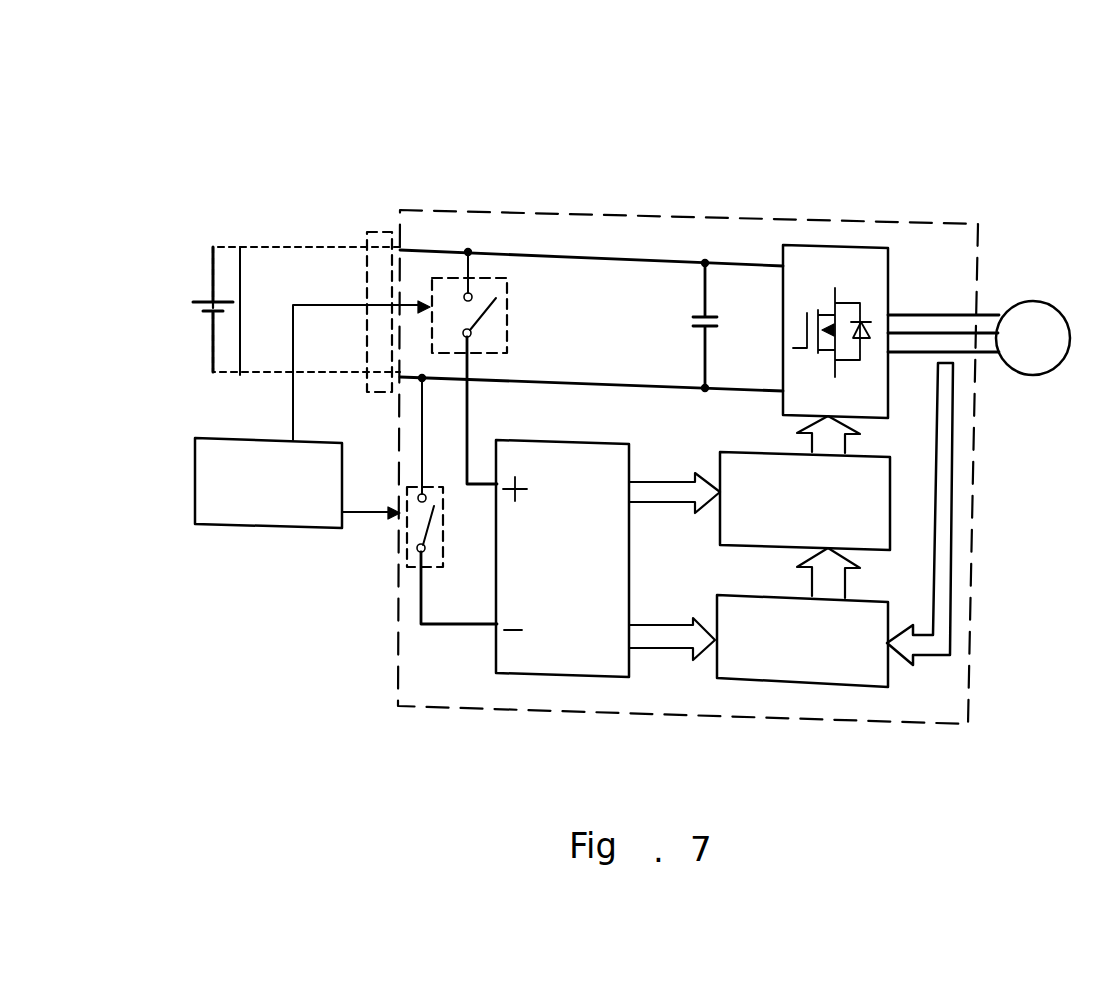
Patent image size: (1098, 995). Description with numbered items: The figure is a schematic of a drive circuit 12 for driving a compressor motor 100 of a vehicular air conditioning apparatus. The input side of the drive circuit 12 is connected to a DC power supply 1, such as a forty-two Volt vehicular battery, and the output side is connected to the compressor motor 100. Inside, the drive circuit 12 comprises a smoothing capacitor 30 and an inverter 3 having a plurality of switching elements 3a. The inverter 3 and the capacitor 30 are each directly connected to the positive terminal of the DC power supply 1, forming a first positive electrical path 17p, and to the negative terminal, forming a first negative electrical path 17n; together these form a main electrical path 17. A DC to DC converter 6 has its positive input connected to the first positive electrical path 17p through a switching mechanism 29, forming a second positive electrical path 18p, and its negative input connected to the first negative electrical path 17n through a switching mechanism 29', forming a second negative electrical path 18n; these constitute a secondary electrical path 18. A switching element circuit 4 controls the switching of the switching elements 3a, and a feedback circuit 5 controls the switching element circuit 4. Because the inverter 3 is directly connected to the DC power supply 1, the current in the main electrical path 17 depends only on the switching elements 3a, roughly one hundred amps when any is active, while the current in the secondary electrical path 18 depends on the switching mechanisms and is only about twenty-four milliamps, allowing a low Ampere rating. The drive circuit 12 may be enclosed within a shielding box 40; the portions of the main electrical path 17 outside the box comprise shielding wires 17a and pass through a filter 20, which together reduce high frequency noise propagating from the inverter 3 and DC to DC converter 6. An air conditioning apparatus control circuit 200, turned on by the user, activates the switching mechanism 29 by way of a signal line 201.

The DC power supply 1 is at (207, 298).
The inverter 3 is at (805, 245).
The switching element 3a is at (845, 296).
The switching element circuit 4 is at (733, 452).
The feedback circuit 5 is at (738, 596).
The DC to DC converter 6 is at (551, 440).
The drive circuit 12 is at (617, 210).
The main electrical path 17 is at (570, 344).
The shielding wires 17a is at (240, 375).
The first positive electrical path 17p is at (567, 268).
The first negative electrical path 17n is at (572, 357).
The secondary electrical path 18 is at (473, 516).
The second positive electrical path 18p is at (466, 487).
The second negative electrical path 18n is at (450, 630).
The filter 20 is at (367, 283).
The switching mechanism 29 is at (478, 183).
The switching mechanism 29' is at (370, 552).
The smoothing capacitor 30 is at (714, 330).
The shielding box 40 is at (968, 694).
The compressor motor 100 is at (1038, 301).
The air conditioning apparatus control circuit 200 is at (257, 528).
The control signal line 201 is at (293, 352).